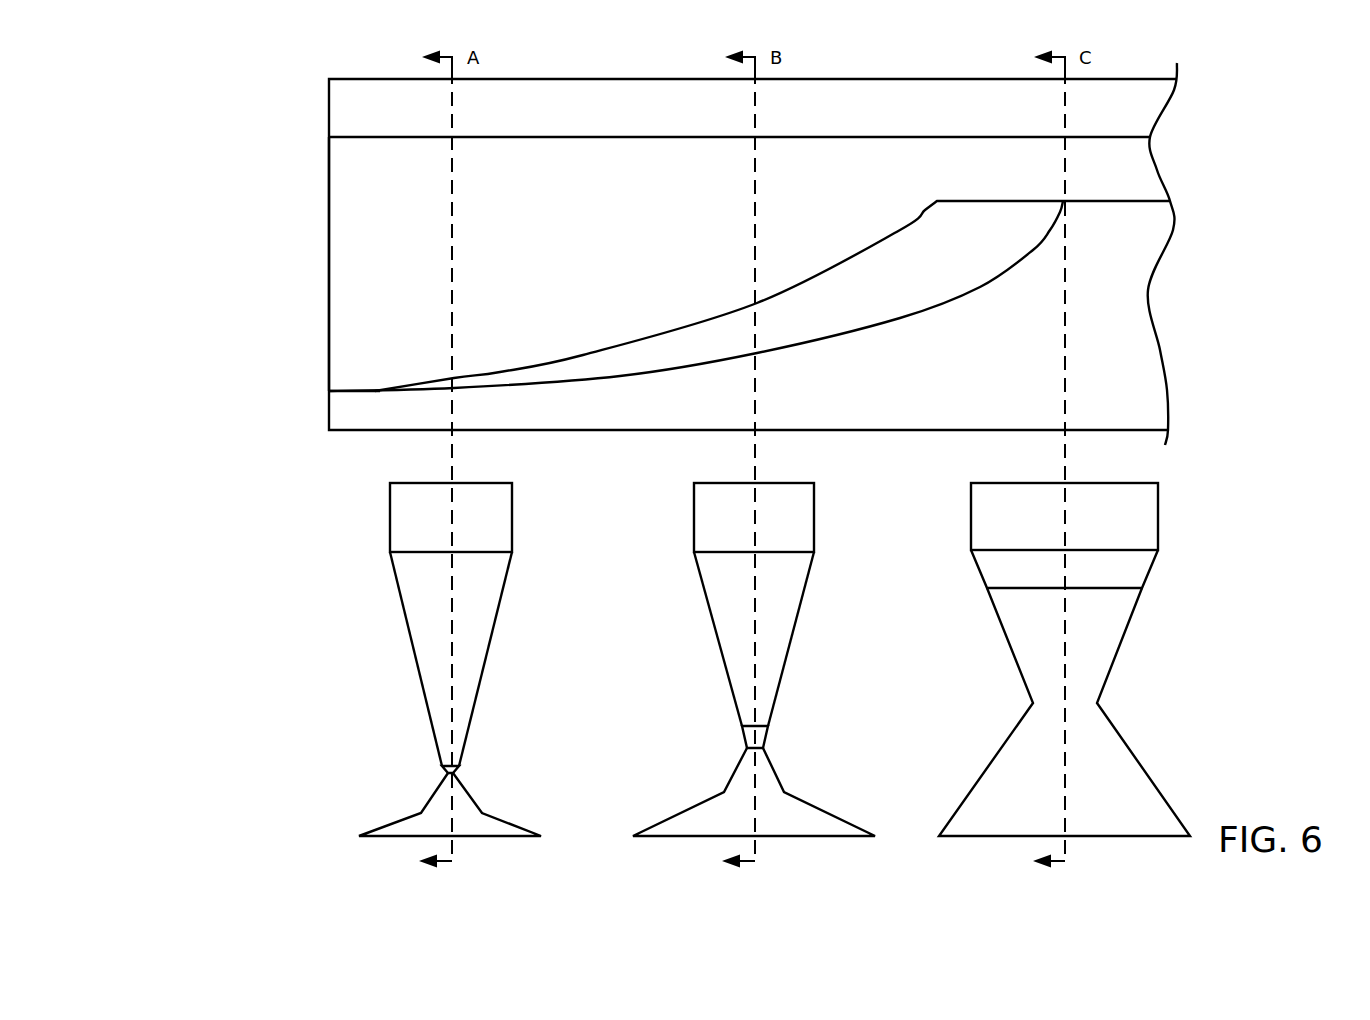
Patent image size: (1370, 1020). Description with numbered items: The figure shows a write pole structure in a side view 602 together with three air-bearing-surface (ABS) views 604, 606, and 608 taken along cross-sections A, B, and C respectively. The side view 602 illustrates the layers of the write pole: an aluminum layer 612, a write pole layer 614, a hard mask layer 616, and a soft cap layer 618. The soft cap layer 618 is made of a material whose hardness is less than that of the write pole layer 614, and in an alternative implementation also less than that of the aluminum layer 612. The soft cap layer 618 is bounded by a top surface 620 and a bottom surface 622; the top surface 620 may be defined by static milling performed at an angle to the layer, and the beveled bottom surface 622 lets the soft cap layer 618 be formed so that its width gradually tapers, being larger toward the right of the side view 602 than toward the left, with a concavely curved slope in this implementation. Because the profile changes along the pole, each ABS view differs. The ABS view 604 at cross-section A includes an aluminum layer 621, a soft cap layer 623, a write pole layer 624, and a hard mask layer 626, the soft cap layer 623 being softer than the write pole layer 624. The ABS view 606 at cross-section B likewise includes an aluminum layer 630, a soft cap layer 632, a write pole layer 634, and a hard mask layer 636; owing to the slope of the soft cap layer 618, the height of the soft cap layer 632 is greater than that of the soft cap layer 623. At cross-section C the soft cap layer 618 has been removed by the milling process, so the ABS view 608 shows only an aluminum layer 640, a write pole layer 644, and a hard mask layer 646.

The side view 602 is at (300, 82).
The ABS view 604 is at (377, 676).
The ABS view 606 is at (711, 676).
The ABS view 608 is at (1013, 680).
The aluminum layer 612 is at (328, 402).
The write pole layer 614 is at (329, 182).
The hard mask layer 616 is at (329, 127).
The soft cap layer 618 is at (856, 282).
The top surface 620 is at (893, 242).
The bottom surface 622 is at (875, 332).
The aluminum layer 621 is at (421, 813).
The soft cap layer 623 is at (441, 767).
The write pole layer 624 is at (418, 670).
The hard mask layer 626 is at (390, 527).
The aluminum layer 630 is at (724, 792).
The soft cap layer 632 is at (745, 741).
The write pole layer 634 is at (730, 683).
The hard mask layer 636 is at (694, 527).
The aluminum layer 640 is at (995, 757).
The write pole layer 644 is at (982, 578).
The hard mask layer 646 is at (971, 525).